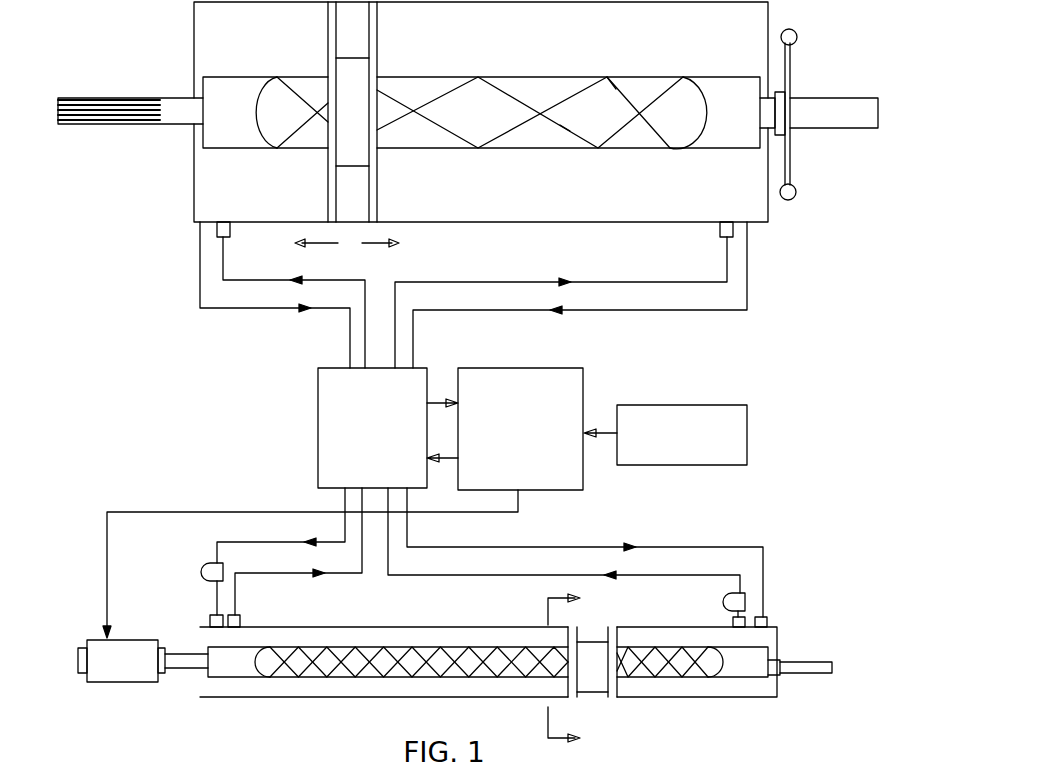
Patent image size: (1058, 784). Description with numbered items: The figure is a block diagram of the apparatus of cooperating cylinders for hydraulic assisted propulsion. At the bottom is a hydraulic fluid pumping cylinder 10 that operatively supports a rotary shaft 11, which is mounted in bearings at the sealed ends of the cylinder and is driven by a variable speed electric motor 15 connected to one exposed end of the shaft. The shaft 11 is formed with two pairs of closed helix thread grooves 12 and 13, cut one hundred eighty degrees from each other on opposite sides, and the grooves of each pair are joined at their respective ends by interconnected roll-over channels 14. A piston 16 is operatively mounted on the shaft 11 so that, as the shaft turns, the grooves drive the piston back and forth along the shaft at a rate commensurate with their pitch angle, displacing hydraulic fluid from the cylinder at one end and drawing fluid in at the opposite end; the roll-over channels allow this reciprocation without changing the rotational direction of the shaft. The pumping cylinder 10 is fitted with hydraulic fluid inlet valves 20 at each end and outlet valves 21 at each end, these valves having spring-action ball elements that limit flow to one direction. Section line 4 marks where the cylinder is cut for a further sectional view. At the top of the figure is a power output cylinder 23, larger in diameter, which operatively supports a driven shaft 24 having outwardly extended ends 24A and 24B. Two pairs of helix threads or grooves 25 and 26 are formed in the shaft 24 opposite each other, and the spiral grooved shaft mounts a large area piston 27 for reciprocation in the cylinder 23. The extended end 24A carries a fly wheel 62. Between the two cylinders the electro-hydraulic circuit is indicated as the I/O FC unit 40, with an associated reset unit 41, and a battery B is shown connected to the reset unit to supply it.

The hydraulic fluid pumping cylinder 10 is at (317, 697).
The rotary shaft 11 is at (388, 677).
The helix thread grooves 12 is at (367, 647).
The helix thread grooves 13 is at (425, 653).
The roll-over channels 14 is at (257, 655).
The variable speed electric motor 15 is at (133, 672).
The piston 16 is at (618, 690).
The hydraulic fluid inlet valves 20 is at (242, 617).
The outlet valves 21 is at (210, 617).
The power output cylinder 23 is at (583, 223).
The driven shaft 24 is at (627, 77).
The outwardly extended shaft end 24A is at (855, 118).
The outwardly extended shaft end 24B is at (180, 120).
The helix threads or grooves 25 is at (616, 89).
The helix threads or grooves 26 is at (570, 132).
The large area piston 27 is at (377, 42).
The I/O FC unit 40 is at (308, 410).
The reset unit 41 is at (590, 372).
The battery B is at (703, 405).
The fly wheel 62 is at (791, 170).
The section line 4- 4 is at (576, 673).